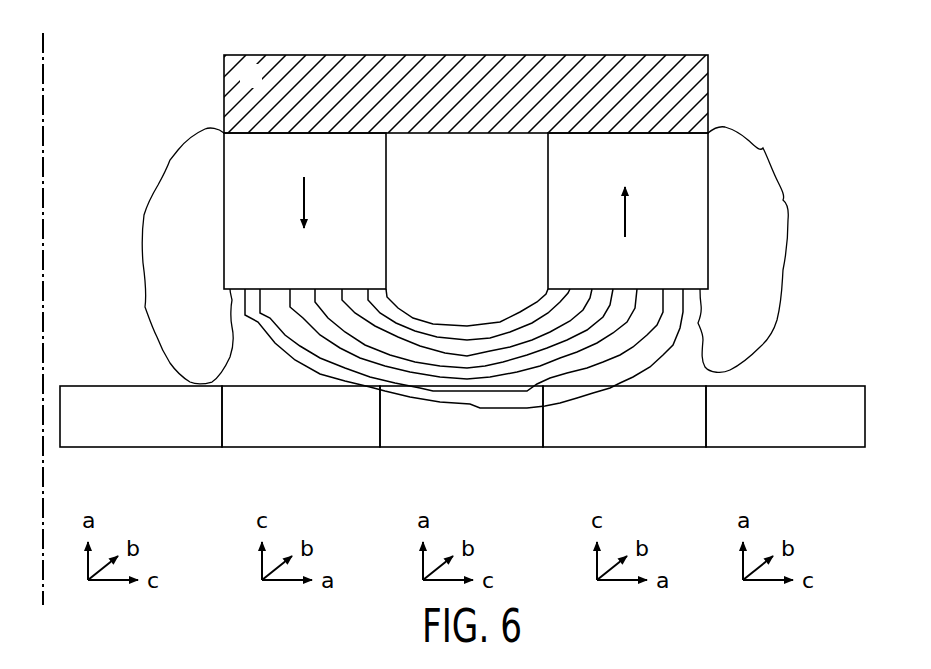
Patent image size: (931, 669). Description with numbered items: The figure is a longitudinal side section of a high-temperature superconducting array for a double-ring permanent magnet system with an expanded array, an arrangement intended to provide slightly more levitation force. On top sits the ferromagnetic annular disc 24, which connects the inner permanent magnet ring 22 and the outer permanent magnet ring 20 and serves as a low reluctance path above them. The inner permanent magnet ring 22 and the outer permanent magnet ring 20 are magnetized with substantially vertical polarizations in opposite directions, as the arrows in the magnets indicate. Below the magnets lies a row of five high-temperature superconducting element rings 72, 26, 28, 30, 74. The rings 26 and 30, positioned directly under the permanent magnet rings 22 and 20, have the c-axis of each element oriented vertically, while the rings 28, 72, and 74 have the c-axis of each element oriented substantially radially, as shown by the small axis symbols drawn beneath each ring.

The outer permanent magnet ring 20 is at (668, 182).
The inner permanent magnet ring 22 is at (257, 195).
The ferromagnetic annular disc 24 is at (708, 73).
The inner annular ring 26 is at (308, 447).
The middle annular ring 28 is at (465, 447).
The outer annular ring 30 is at (663, 447).
The high-temperature superconducting element ring 72 is at (145, 447).
The high-temperature superconducting element ring 74 is at (820, 447).